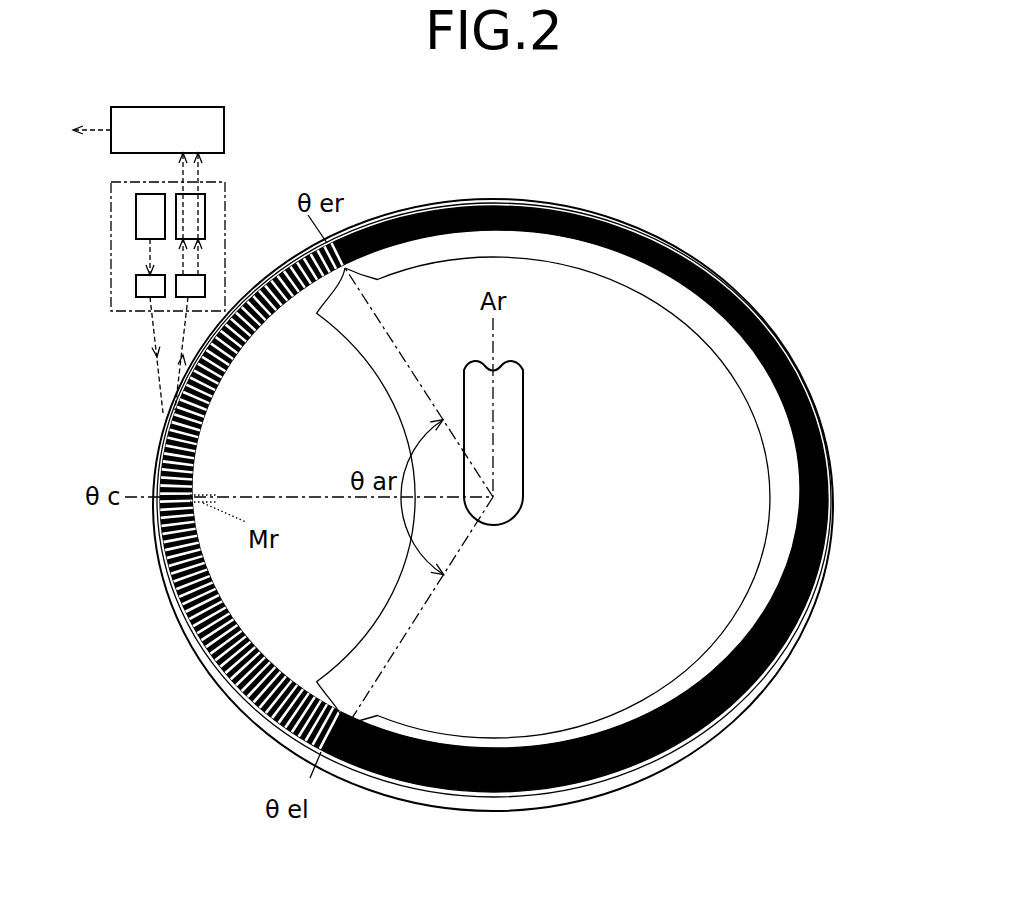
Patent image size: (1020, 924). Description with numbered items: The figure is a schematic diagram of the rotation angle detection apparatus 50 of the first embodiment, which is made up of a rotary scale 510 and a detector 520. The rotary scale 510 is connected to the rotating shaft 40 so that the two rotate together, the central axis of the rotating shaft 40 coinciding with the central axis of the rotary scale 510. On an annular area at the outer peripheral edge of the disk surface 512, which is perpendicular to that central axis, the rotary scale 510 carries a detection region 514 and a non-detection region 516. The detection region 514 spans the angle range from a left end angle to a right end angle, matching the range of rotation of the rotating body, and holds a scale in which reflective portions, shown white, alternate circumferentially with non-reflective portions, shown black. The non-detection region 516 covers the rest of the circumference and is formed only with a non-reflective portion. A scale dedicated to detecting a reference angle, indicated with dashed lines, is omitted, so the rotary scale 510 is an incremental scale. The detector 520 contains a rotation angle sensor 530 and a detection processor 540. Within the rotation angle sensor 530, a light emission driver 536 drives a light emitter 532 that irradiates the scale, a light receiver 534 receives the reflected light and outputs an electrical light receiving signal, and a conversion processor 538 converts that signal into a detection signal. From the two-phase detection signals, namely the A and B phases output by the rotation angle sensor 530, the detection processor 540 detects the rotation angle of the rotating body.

The rotation angle detection apparatus 50 is at (795, 125).
The rotary scale 510 is at (833, 473).
The disk surface 512 is at (730, 362).
The detection region 514 is at (232, 422).
The non-detection region 516 is at (770, 500).
The rotating shaft 40 is at (523, 427).
The detector 520 is at (221, 259).
The rotation angle sensor 530 is at (180, 230).
The light emitter 532 is at (136, 288).
The light receiver 534 is at (205, 285).
The light emission driver 536 is at (136, 217).
The conversion processor 538 is at (205, 222).
The detection processor 540 is at (224, 132).